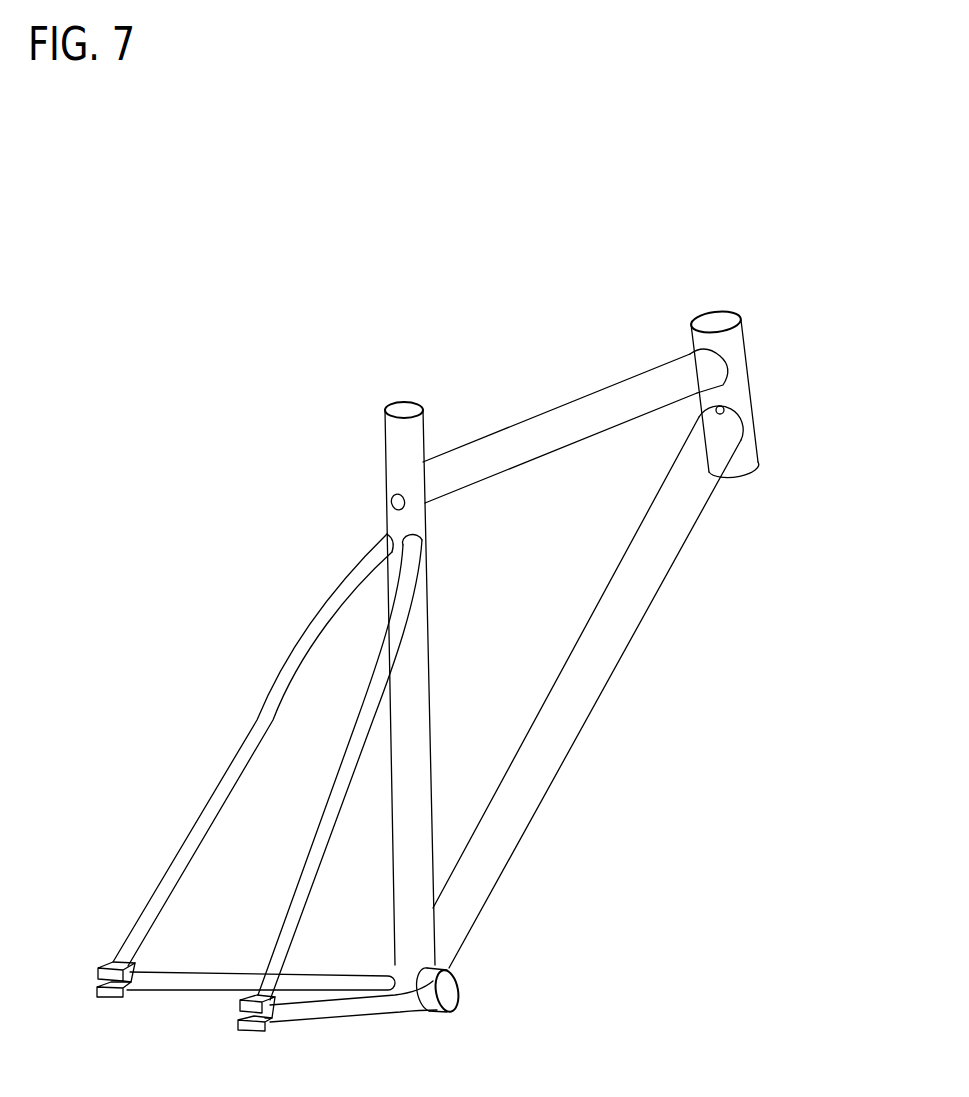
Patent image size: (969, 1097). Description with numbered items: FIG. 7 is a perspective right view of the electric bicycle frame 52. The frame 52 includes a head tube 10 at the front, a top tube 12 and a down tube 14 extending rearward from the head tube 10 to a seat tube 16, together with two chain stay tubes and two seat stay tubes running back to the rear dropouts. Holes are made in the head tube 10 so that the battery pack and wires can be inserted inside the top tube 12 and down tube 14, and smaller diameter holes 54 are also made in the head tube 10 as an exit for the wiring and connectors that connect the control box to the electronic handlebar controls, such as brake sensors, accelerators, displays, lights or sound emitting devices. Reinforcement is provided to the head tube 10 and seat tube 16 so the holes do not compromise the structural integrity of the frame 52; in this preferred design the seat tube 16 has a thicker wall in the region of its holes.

The head tube 10 is at (726, 342).
The top tube 12 is at (579, 418).
The down tube 14 is at (588, 662).
The seat tube 16 is at (407, 765).
The bicycle frame 52 is at (215, 358).
The smaller diameter holes 54 is at (728, 405).